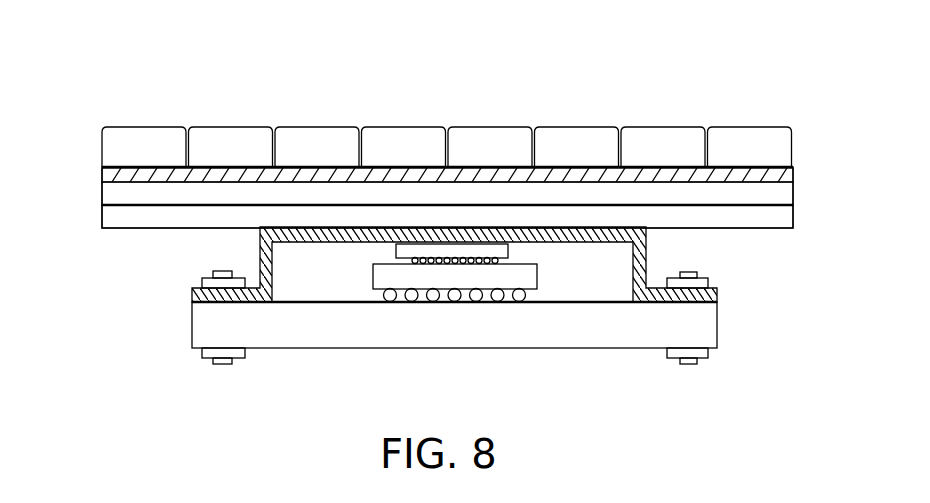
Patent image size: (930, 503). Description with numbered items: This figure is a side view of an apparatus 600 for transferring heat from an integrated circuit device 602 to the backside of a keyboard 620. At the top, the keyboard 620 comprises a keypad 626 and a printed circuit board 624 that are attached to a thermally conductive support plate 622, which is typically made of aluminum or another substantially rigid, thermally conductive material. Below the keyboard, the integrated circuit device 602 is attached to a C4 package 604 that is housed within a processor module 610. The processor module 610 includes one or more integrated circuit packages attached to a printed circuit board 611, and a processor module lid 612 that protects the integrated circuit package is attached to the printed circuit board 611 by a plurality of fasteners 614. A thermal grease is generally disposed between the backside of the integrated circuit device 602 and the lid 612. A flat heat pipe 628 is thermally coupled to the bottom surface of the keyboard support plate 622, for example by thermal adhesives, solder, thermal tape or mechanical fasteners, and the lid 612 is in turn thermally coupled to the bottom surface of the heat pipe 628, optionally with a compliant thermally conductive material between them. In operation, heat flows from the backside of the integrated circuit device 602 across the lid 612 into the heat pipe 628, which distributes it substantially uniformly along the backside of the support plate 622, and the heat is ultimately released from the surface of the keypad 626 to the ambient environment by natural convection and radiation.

The apparatus 600 is at (224, 43).
The integrated circuit device 602 is at (505, 245).
The C4 package 604 is at (383, 277).
The processor module 610 is at (172, 297).
The printed circuit board 611 is at (707, 328).
The processor module lid 612 is at (647, 253).
The fasteners 614 is at (703, 270).
The keyboard 620 is at (808, 157).
The thermally conductive support plate 622 is at (102, 195).
The printed circuit board 624 is at (102, 174).
The keypad 626 is at (127, 137).
The flat heat pipe 628 is at (140, 217).